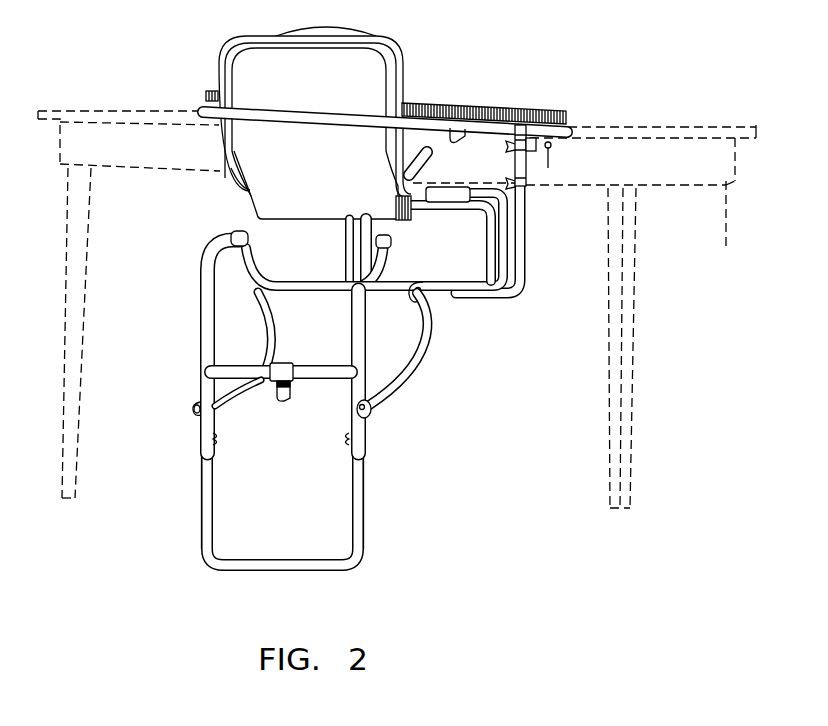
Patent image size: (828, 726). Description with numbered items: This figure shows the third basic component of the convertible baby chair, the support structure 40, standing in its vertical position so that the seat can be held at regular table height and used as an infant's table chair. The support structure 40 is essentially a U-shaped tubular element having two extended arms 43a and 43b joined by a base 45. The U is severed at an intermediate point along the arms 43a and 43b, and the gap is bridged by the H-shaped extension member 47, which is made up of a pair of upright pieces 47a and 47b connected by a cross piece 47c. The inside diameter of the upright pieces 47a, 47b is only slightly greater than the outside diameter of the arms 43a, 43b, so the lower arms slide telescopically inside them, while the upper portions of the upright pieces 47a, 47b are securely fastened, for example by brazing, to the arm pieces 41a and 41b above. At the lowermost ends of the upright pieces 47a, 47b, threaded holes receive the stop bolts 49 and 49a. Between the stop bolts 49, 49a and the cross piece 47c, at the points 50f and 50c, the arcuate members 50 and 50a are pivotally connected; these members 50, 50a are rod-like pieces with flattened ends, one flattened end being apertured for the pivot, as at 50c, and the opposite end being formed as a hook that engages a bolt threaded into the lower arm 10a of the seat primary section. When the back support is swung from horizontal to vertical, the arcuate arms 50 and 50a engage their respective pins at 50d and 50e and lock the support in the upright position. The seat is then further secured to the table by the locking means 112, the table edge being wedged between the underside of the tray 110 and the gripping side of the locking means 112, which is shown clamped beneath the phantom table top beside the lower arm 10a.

The lower arm of seat primary section 10a is at (463, 284).
The tray 110 is at (477, 97).
The locking means 112 is at (570, 128).
The support structure 40 is at (289, 504).
The arm piece 41a is at (196, 272).
The arm piece 41b is at (343, 273).
The extended arm 43a is at (195, 494).
The extended arm 43b is at (352, 500).
The base 45 is at (258, 557).
The H-shaped extension member 47 is at (337, 371).
The upright piece 47a is at (202, 338).
The upright piece 47b is at (352, 335).
The cross piece 47c is at (314, 347).
The stop bolt 49 is at (223, 428).
The stop bolt 49a is at (335, 428).
The arcuate member 50 is at (270, 322).
The arcuate member 50a is at (423, 333).
The pivot point 50c is at (364, 403).
The pin engagement point 50d is at (413, 277).
The pin engagement point 50e is at (265, 275).
The pivot point 50f is at (184, 406).